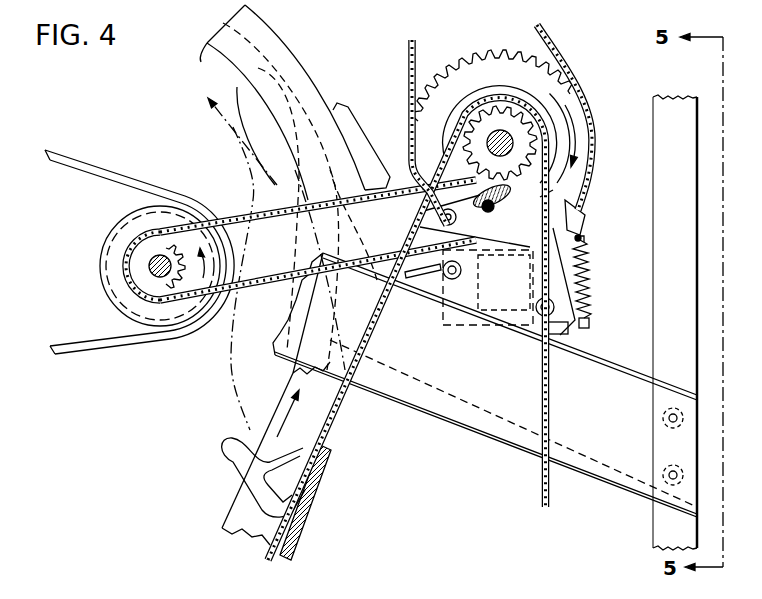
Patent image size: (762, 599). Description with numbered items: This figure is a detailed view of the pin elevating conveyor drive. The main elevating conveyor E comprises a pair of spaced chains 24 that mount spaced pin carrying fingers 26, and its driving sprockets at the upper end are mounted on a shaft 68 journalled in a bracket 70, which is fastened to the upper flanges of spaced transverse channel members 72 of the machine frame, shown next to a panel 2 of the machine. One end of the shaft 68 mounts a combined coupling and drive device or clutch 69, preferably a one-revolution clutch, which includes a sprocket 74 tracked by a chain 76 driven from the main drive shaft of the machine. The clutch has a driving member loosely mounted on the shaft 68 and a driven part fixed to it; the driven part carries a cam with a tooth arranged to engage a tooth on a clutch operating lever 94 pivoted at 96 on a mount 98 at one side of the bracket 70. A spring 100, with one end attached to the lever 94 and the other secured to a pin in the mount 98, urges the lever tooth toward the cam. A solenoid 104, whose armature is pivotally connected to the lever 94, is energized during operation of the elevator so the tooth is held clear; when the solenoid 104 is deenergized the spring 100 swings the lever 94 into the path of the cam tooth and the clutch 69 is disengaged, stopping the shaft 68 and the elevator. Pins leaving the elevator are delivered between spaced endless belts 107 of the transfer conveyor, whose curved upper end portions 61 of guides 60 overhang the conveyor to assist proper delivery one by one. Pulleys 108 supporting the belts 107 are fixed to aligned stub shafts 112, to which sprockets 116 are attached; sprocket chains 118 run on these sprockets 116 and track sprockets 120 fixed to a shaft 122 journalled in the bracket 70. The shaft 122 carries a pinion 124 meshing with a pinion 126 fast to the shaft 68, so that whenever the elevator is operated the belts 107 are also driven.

The side wall panel 2 is at (662, 100).
The chains 24 is at (340, 407).
The pin carrying fingers 26 is at (230, 467).
The guides 60 is at (278, 410).
The upper end portions 61 is at (213, 57).
The shaft 68 is at (510, 130).
The clutch 69 is at (473, 84).
The bracket 70 is at (585, 242).
The transverse channel members 72 is at (507, 433).
The sprocket 74 is at (440, 83).
The chain 76 is at (548, 32).
The clutch operating lever 94 is at (577, 227).
The pivot 96 is at (572, 210).
The mount 98 is at (465, 340).
The spring 100 is at (587, 278).
The solenoid 104 is at (532, 327).
The endless belts 107 is at (73, 165).
The pulleys 108 is at (115, 290).
The stub shafts 112 is at (150, 257).
The sprockets 116 is at (152, 283).
The sprocket chains 118 is at (282, 282).
The sprockets 120 is at (443, 203).
The shaft 122 is at (443, 230).
The pinion 124 is at (561, 186).
The pinion 126 is at (487, 137).